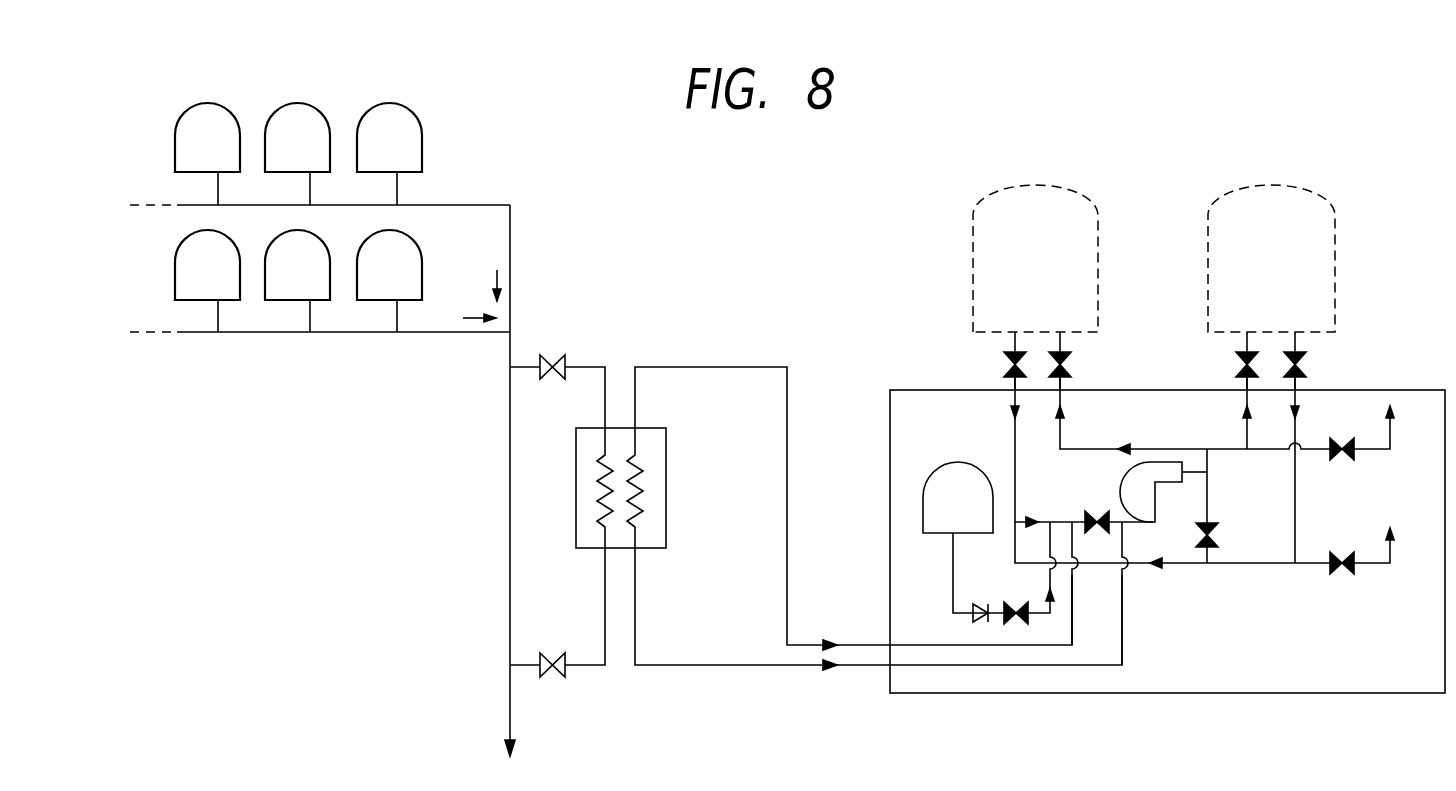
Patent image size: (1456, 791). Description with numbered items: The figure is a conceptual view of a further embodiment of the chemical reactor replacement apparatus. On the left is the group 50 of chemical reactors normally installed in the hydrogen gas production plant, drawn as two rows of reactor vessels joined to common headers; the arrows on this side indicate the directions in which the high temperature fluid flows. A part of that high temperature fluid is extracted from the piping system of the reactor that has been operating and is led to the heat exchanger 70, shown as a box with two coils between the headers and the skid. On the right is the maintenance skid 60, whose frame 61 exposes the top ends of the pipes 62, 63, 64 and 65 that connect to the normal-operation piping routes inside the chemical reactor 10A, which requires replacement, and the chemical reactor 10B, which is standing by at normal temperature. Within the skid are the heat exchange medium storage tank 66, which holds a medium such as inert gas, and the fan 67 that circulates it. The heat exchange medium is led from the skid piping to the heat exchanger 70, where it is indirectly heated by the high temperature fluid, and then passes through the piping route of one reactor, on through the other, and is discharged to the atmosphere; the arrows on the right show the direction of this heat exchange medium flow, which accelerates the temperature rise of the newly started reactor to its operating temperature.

The chemical reactor 10A is at (986, 200).
The chemical reactor 10B is at (1220, 200).
The group of chemical reactors 50 is at (320, 350).
The maintenance skid 60 is at (862, 330).
The frame 61 is at (1370, 390).
The pipe 62 is at (1014, 332).
The pipe 63 is at (1060, 332).
The pipe 64 is at (1247, 332).
The pipe 65 is at (1295, 332).
The heat exchange medium storage tank 66 is at (945, 462).
The fan 67 is at (1157, 508).
The heat exchanger 70 is at (655, 548).